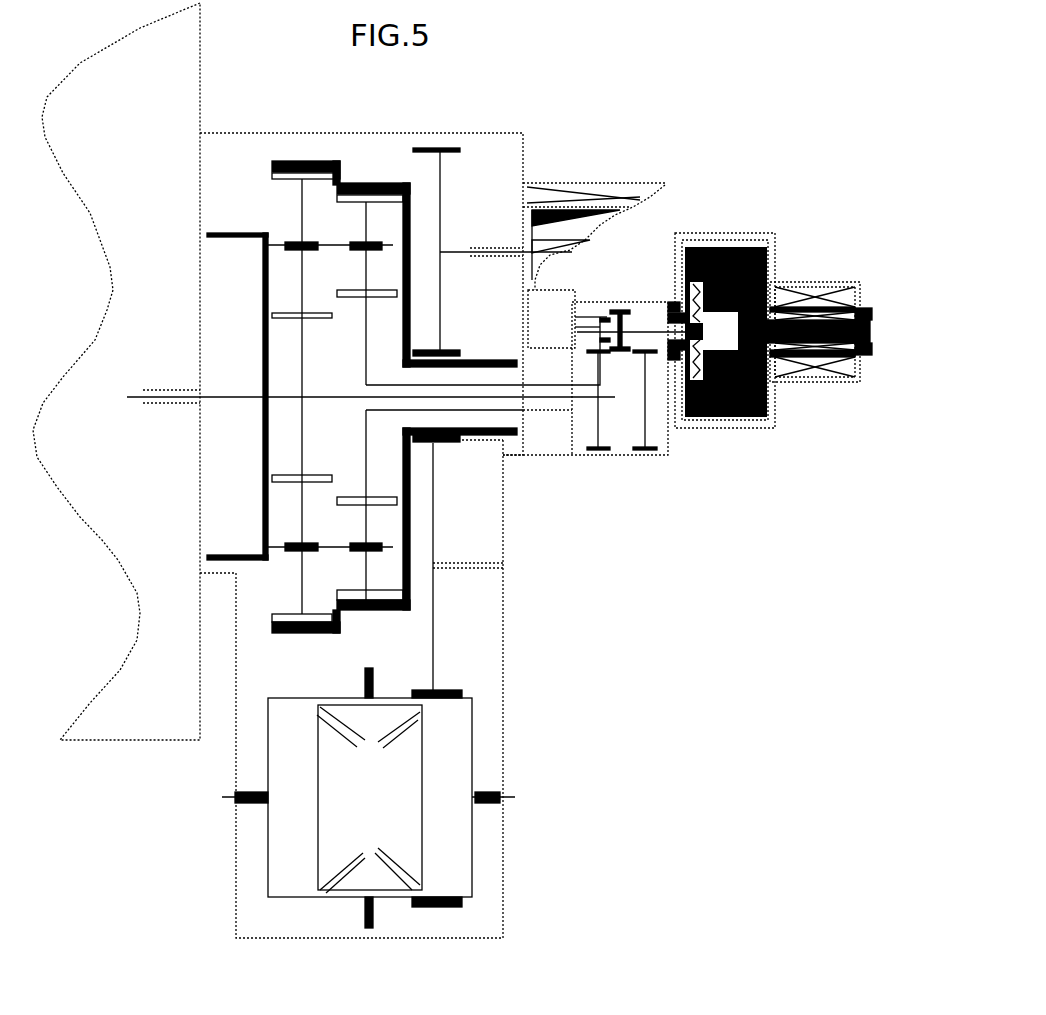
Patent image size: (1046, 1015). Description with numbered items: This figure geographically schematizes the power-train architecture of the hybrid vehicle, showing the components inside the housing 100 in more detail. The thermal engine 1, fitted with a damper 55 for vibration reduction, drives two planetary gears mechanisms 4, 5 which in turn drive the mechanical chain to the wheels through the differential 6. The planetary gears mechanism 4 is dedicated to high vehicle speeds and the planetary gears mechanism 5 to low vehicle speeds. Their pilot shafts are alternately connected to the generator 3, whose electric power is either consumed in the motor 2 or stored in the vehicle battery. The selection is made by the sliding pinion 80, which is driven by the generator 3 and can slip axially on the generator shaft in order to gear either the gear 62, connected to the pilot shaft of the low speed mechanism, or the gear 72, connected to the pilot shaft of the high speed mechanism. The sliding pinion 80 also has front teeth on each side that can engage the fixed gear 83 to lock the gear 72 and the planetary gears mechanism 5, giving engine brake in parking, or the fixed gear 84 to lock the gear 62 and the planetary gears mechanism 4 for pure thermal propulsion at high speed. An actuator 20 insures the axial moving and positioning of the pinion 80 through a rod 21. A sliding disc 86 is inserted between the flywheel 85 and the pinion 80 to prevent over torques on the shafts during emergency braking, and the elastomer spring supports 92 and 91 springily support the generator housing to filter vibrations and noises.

The thermal engine 1 is at (142, 740).
The motor 2 is at (627, 183).
The generator 3 is at (850, 382).
The planetary gears mechanism 4 is at (303, 533).
The planetary gears mechanism 5 is at (366, 520).
The differential 6 is at (472, 732).
The actuator 20 is at (541, 290).
The rod 21 is at (582, 317).
The damper 55 is at (250, 558).
The gear 62 is at (640, 450).
The gear 72 is at (592, 450).
The sliding pinion 80 is at (623, 352).
The fixed gear 83 is at (582, 342).
The fixed gear 84 is at (657, 338).
The flywheel 85 is at (775, 410).
The sliding disc 86 is at (687, 417).
The spring support 91 is at (867, 308).
The spring support 92 is at (673, 303).
The housing 100 is at (503, 910).